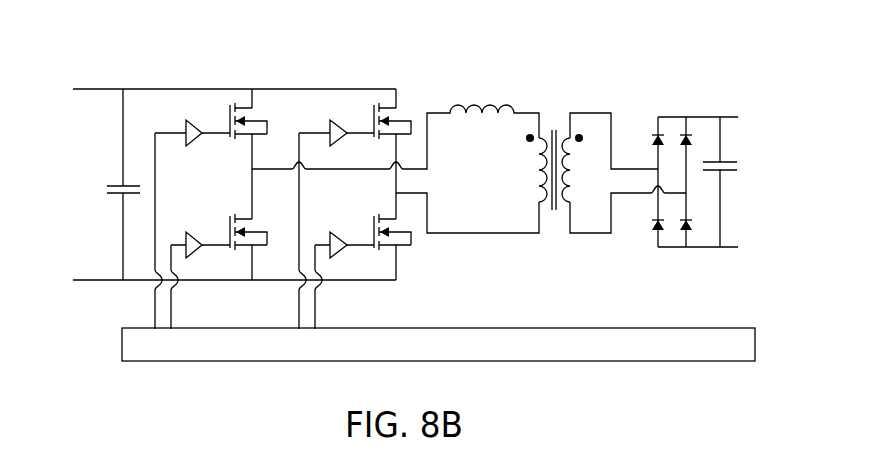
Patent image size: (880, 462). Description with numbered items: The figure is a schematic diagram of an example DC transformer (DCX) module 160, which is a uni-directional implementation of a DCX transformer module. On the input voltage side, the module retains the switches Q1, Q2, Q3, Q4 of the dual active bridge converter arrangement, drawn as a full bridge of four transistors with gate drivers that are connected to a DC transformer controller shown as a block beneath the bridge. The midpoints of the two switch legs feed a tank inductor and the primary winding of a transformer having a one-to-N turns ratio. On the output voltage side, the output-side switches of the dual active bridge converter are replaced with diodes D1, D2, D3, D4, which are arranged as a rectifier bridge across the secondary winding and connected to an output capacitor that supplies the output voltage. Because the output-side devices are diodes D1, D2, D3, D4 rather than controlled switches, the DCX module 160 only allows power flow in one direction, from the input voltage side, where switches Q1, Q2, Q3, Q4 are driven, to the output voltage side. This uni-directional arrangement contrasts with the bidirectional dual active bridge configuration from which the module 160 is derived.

The DC transformer module 160 is at (93, 65).
The switch Q1 is at (211, 215).
The switch Q2 is at (219, 266).
The switch Q3 is at (355, 215).
The switch Q4 is at (363, 271).
The diode D1 is at (645, 145).
The diode D2 is at (645, 220).
The diode D3 is at (696, 229).
The diode D4 is at (696, 141).